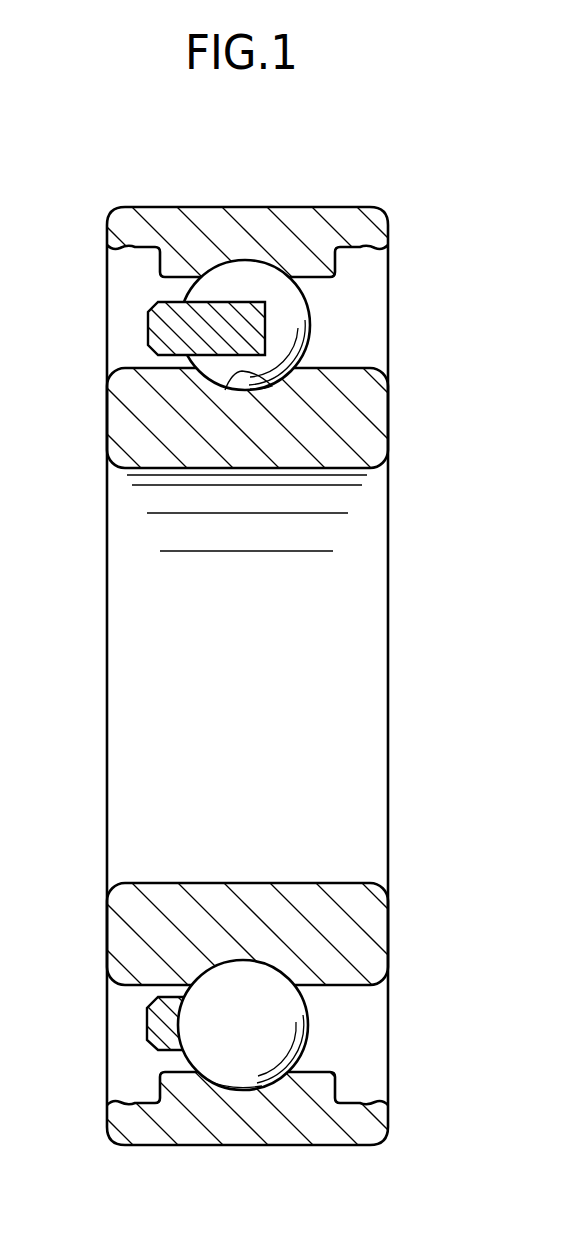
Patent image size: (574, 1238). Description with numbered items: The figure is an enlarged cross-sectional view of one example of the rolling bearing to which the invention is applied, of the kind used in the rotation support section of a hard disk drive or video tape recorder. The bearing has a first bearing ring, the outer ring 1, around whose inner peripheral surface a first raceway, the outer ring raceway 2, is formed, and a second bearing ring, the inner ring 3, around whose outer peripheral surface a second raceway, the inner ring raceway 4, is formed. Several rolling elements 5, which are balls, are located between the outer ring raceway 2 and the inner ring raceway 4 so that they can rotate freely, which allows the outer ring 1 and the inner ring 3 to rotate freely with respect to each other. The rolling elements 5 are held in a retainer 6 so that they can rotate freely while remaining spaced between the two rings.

The outer ring 1 is at (201, 218).
The outer ring raceway 2 is at (250, 270).
The inner ring 3 is at (384, 424).
The inner ring raceway 4 is at (296, 380).
The rolling elements 5 is at (208, 374).
The retainer 6 is at (150, 328).